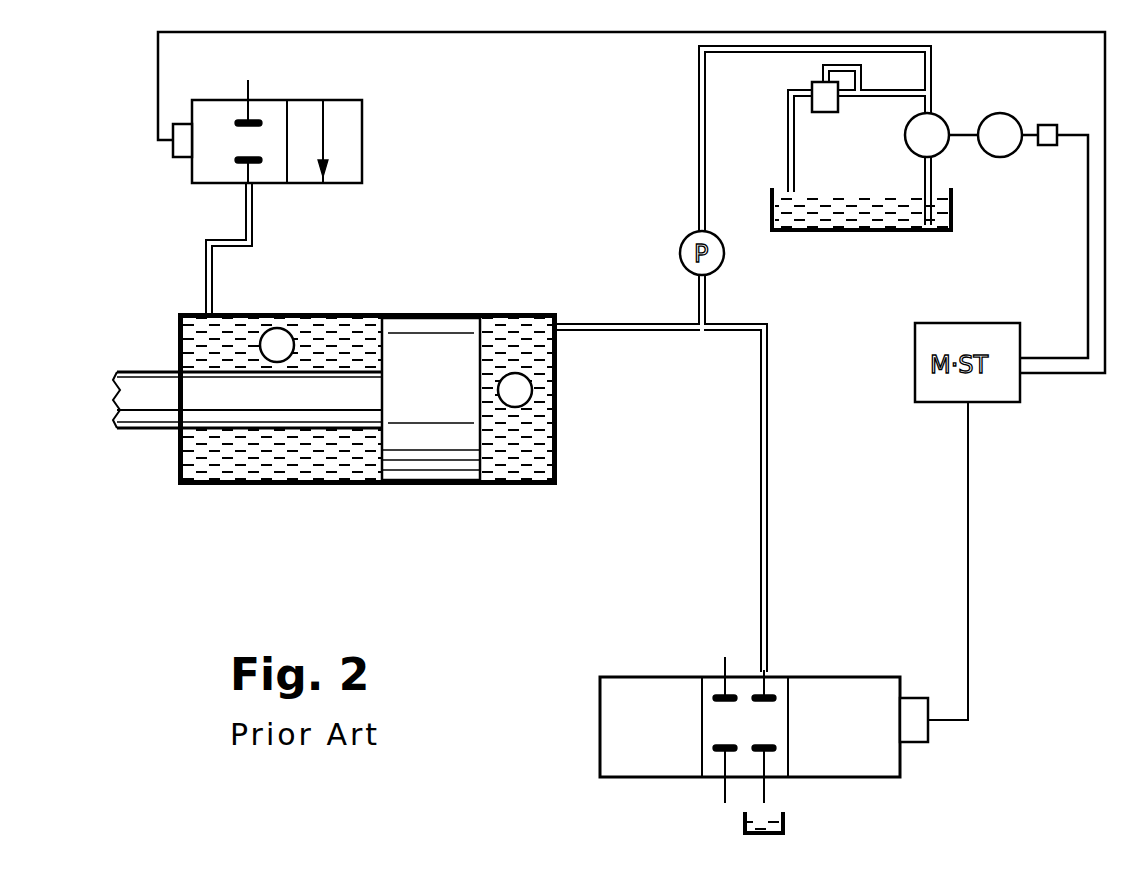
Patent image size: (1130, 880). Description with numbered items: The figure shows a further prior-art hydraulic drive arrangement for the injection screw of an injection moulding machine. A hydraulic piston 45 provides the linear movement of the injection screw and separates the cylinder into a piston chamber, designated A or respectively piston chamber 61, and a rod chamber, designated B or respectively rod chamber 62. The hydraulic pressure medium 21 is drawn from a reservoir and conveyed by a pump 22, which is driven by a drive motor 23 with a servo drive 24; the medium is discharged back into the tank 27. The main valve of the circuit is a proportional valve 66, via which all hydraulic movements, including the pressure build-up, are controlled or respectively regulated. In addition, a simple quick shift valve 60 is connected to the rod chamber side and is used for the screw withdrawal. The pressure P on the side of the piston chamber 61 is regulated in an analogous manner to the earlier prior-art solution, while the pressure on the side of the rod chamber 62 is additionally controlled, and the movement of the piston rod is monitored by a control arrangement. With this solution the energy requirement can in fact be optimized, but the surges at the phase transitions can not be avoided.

The quick shift valve 60 is at (313, 183).
The piston chamber (A) 61 is at (515, 343).
The rod chamber (B) 62 is at (331, 337).
The hydraulic piston 45 is at (447, 450).
The hydraulic pressure medium 21 is at (826, 197).
The pump 22 is at (940, 117).
The drive motor 23 is at (1010, 114).
The servo drive 24 is at (1057, 125).
The tank 27 is at (953, 208).
The proportional valve 66 is at (815, 677).